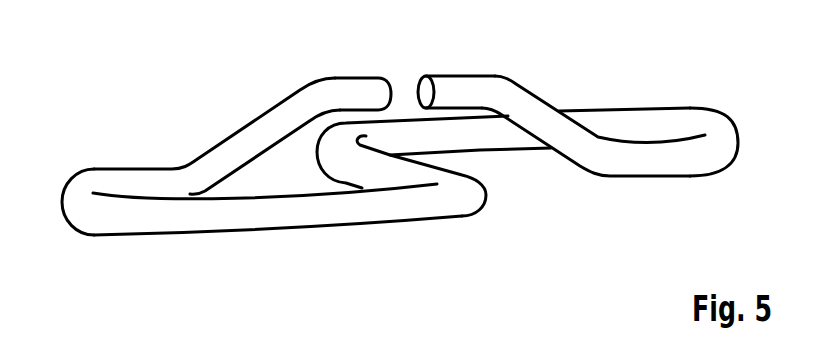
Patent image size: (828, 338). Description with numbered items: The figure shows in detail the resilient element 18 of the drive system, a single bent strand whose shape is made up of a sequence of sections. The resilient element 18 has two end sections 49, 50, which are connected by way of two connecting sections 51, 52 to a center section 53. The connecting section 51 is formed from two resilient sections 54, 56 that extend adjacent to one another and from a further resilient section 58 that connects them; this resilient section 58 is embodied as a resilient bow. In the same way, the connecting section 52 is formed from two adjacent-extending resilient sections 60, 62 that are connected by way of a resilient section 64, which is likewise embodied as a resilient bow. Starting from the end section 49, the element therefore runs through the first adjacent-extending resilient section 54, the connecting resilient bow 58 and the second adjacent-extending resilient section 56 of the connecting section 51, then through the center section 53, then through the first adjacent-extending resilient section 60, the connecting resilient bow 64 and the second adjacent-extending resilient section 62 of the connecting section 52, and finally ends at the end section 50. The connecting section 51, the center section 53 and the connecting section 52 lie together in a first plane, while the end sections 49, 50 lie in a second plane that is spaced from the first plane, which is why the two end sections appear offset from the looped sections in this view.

The resilient element 18 is at (168, 85).
The end section 49 is at (348, 88).
The end section 50 is at (462, 88).
The connecting section 51 is at (83, 258).
The connecting section 52 is at (680, 60).
The center section 53 is at (368, 167).
The resilient section 54 is at (152, 174).
The resilient section 56 is at (160, 214).
The resilient section 58 is at (74, 191).
The resilient section 60 is at (622, 120).
The resilient section 62 is at (674, 153).
The resilient section 64 is at (719, 138).